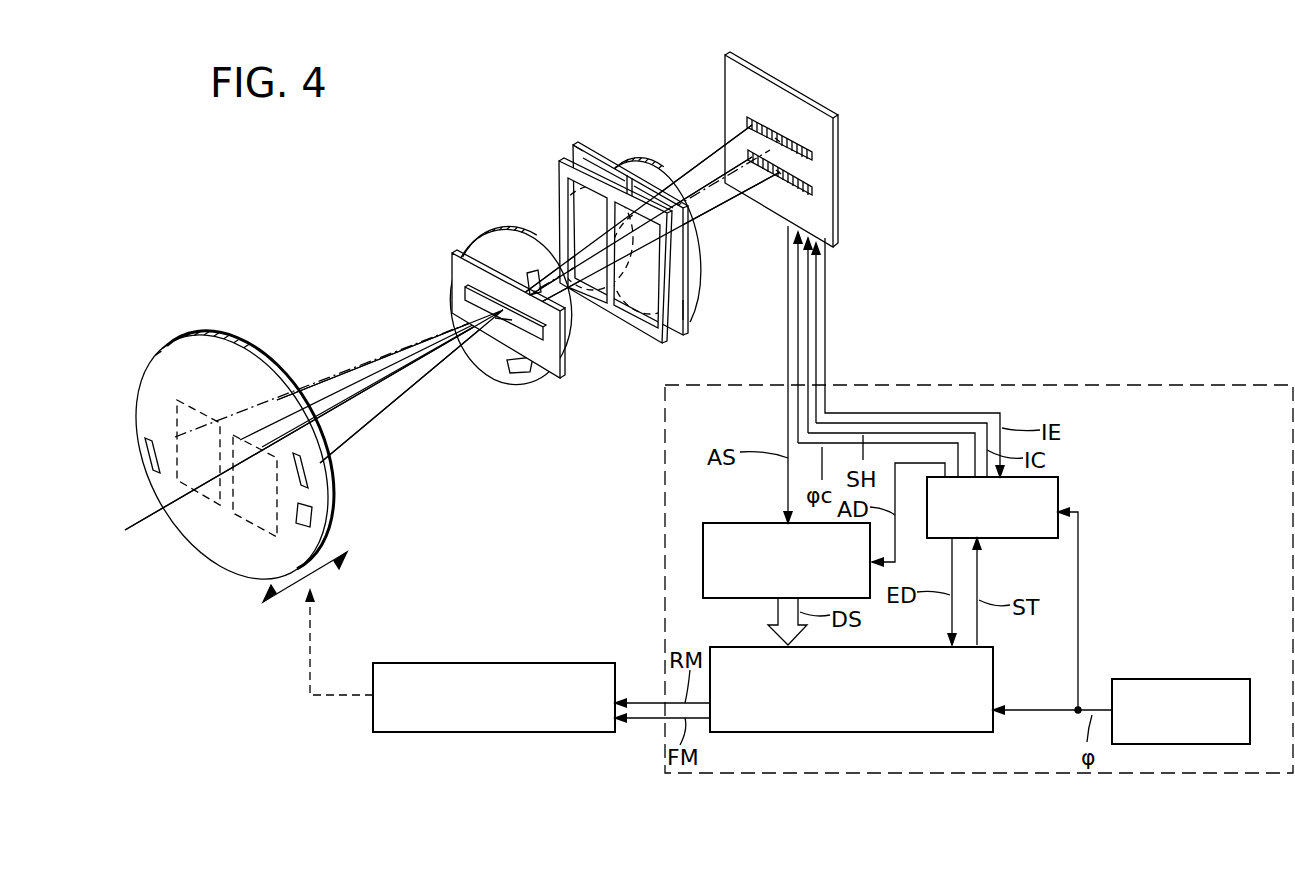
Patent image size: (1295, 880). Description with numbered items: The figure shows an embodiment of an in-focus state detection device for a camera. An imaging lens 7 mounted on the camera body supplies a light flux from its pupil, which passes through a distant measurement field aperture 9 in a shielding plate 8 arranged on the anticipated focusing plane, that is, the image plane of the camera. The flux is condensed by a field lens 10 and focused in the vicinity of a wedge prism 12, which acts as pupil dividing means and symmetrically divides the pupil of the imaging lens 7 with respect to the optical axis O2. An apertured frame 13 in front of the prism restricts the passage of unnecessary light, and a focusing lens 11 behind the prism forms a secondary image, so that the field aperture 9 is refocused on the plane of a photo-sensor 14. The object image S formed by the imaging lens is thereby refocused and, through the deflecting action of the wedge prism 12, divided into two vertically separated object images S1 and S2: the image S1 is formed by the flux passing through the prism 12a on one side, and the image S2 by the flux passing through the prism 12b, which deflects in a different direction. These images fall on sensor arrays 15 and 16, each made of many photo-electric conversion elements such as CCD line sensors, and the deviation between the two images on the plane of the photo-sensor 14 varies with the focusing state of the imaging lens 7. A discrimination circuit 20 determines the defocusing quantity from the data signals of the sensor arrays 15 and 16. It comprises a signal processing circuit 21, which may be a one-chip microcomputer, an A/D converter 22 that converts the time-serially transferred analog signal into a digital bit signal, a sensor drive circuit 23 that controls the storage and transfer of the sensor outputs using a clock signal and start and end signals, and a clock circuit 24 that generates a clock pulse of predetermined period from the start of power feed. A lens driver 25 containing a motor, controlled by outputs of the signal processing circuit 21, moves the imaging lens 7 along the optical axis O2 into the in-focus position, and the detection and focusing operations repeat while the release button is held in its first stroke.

The imaging lens 7 is at (210, 335).
The shielding plate 8 is at (452, 258).
The distant measurement field aperture 9 is at (465, 292).
The field lens 10 is at (500, 232).
The focusing lens 11 is at (645, 160).
The wedge prism 12 is at (598, 150).
The prism 12a is at (688, 312).
The prism 12b is at (578, 144).
The apertured frame 13 is at (559, 163).
The photo-sensor 14 is at (725, 72).
The sensor array 15 is at (812, 150).
The sensor array 16 is at (812, 185).
The discrimination circuit 20 is at (1213, 383).
The signal processing circuit 21 is at (995, 662).
The A/D converter 22 is at (742, 522).
The sensor drive circuit 23 is at (1060, 488).
The clock circuit 24 is at (1182, 678).
The lens driver 25 is at (487, 662).
The object image S is at (512, 322).
The object image S1 is at (778, 172).
The object image S2 is at (777, 140).
The optical axis O2 is at (143, 532).